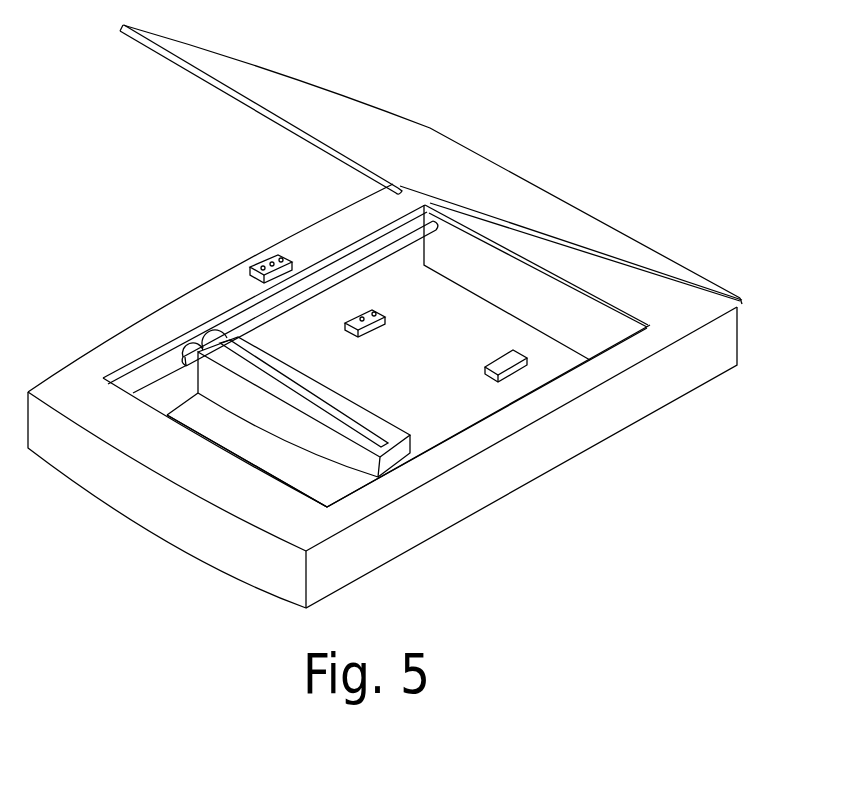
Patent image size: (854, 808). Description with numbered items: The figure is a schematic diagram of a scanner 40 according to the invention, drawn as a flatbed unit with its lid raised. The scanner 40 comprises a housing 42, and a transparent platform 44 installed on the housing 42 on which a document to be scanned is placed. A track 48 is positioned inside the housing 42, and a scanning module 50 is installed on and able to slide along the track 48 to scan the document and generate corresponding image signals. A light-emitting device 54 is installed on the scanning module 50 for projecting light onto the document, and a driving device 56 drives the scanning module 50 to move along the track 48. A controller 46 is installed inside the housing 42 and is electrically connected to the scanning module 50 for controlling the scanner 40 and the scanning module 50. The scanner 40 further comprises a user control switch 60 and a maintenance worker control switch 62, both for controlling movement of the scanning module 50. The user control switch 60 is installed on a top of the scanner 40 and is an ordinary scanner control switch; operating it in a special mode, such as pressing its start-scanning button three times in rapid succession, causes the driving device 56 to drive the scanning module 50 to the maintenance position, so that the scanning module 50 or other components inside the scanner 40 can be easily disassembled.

The scanner 40 is at (614, 138).
The housing 42 is at (623, 403).
The transparent platform 44 is at (440, 425).
The controller 46 is at (513, 357).
The track 48 is at (247, 333).
The scanning module 50 is at (367, 472).
The light-emitting device 54 is at (360, 435).
The driving device 56 is at (232, 332).
The user control switch 60 is at (266, 257).
The maintenance worker control switch 62 is at (358, 312).